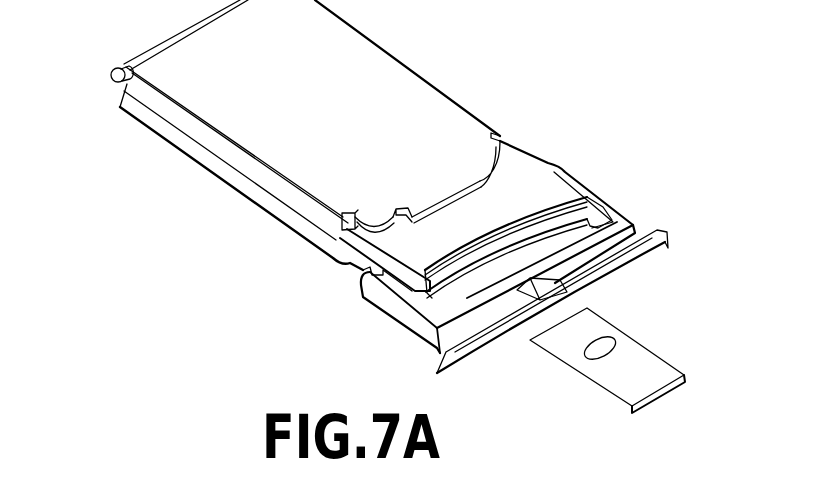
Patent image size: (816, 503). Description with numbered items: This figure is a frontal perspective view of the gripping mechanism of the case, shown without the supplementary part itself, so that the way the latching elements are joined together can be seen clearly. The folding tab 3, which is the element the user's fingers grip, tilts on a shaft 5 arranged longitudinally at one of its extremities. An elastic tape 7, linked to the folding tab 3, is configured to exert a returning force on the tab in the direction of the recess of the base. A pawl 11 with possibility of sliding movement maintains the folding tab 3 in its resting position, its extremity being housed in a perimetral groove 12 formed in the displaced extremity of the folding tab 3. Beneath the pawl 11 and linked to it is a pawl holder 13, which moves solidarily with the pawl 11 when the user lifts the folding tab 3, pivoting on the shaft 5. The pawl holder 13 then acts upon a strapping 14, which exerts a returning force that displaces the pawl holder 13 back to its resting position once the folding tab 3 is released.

The folding tab 3 is at (410, 88).
The shaft 5 is at (110, 76).
The elastic tape 7 is at (612, 373).
The pawl 11 is at (528, 170).
The perimetral groove 12 is at (352, 229).
The pawl holder 13 is at (587, 223).
The strapping 14 is at (611, 278).